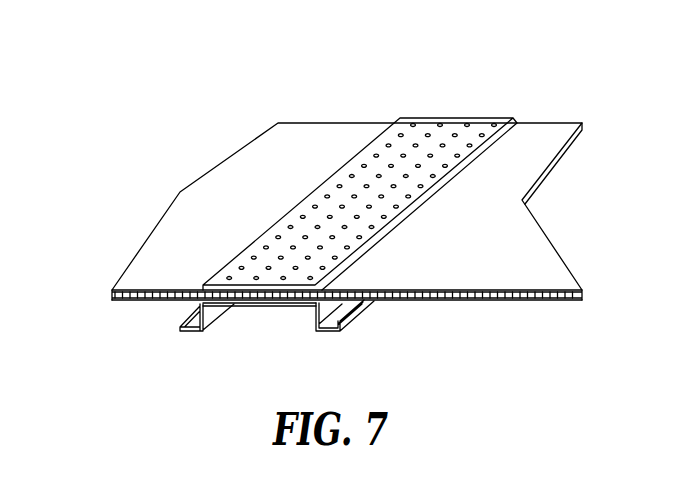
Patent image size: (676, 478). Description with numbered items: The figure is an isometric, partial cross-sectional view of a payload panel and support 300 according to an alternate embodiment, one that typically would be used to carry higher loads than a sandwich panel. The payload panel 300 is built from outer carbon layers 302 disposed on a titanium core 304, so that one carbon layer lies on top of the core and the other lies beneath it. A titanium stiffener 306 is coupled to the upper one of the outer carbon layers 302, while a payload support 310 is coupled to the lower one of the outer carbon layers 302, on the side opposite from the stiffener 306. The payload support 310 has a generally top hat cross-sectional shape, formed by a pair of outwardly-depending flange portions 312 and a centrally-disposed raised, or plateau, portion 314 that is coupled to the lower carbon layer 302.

The payload panel and support 300 is at (136, 121).
The outer carbon layer 302 is at (112, 289).
The titanium core 304 is at (112, 294).
The titanium stiffener 306 is at (394, 143).
The payload support 310 is at (371, 346).
The flange portion 312 is at (187, 335).
The raised portion 314 is at (260, 324).